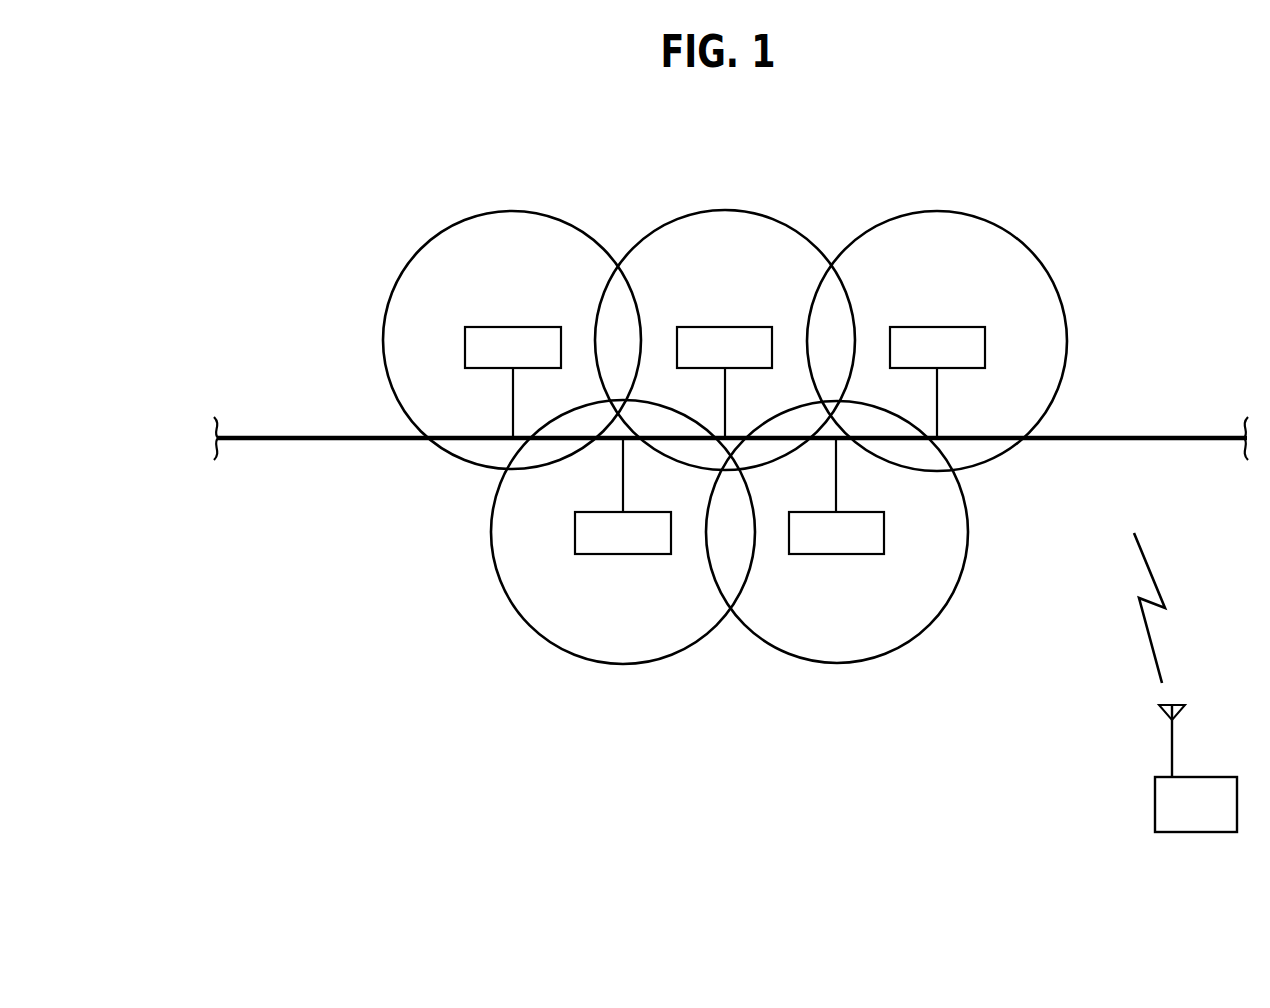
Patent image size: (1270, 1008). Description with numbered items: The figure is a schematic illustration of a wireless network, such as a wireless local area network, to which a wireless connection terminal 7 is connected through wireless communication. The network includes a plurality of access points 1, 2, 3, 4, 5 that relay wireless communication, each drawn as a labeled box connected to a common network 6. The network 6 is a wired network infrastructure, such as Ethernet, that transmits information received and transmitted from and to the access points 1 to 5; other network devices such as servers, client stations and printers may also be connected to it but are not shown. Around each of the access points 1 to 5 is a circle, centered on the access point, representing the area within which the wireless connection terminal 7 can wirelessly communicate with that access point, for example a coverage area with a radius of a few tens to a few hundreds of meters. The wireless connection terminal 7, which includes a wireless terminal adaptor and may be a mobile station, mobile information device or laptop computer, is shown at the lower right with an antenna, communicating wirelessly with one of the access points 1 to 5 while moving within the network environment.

The access point 1 is at (532, 327).
The access point 2 is at (743, 327).
The access point 3 is at (963, 327).
The access point 4 is at (624, 554).
The access point 5 is at (863, 554).
The network 6 is at (1138, 440).
The wireless connection terminal 7 is at (1208, 832).